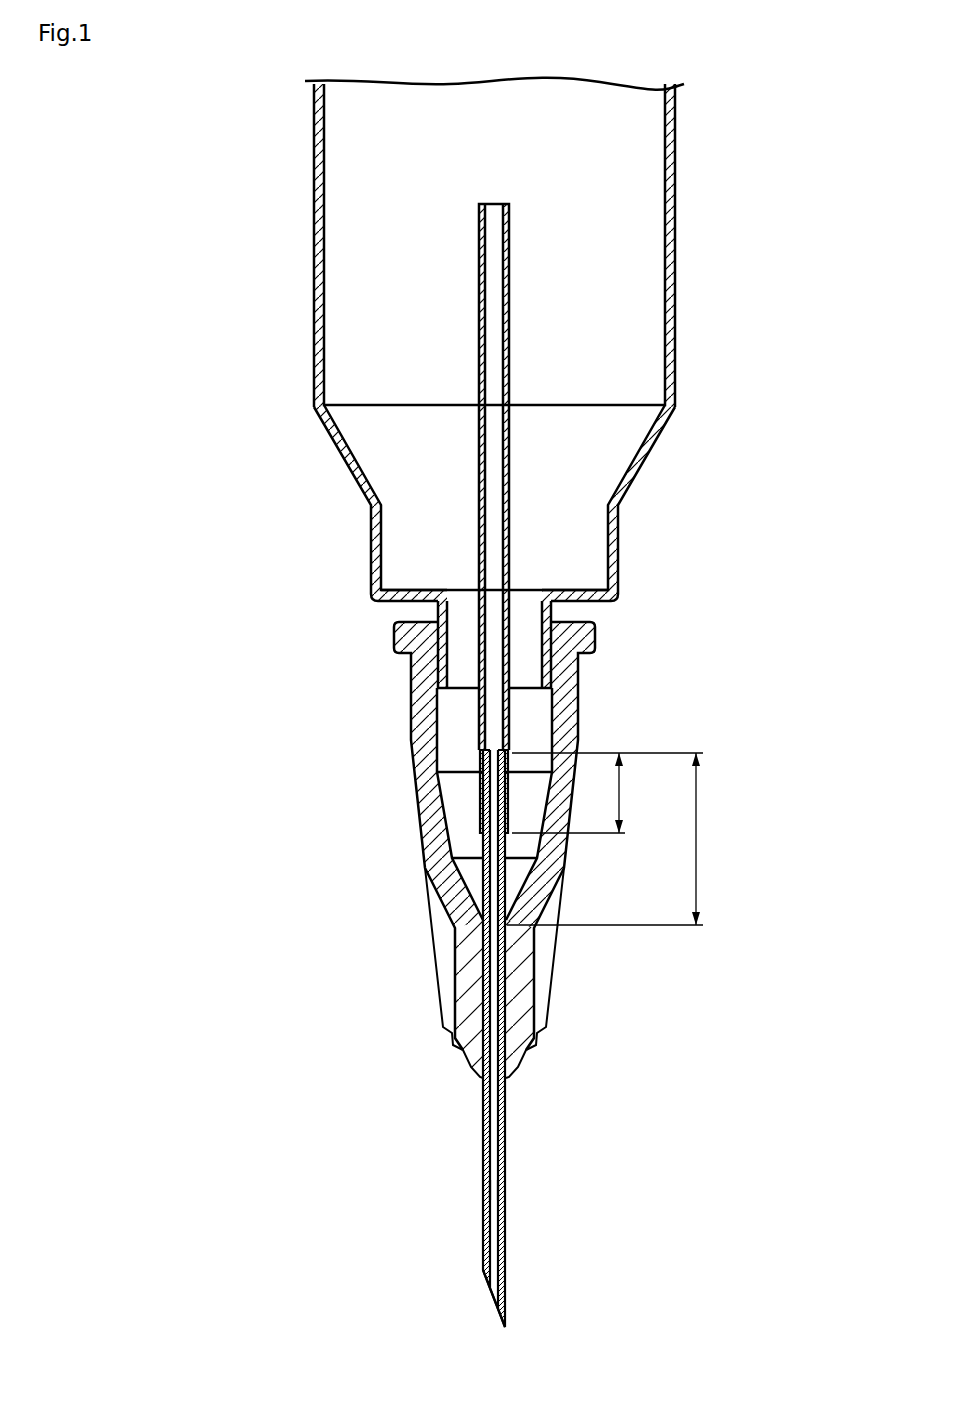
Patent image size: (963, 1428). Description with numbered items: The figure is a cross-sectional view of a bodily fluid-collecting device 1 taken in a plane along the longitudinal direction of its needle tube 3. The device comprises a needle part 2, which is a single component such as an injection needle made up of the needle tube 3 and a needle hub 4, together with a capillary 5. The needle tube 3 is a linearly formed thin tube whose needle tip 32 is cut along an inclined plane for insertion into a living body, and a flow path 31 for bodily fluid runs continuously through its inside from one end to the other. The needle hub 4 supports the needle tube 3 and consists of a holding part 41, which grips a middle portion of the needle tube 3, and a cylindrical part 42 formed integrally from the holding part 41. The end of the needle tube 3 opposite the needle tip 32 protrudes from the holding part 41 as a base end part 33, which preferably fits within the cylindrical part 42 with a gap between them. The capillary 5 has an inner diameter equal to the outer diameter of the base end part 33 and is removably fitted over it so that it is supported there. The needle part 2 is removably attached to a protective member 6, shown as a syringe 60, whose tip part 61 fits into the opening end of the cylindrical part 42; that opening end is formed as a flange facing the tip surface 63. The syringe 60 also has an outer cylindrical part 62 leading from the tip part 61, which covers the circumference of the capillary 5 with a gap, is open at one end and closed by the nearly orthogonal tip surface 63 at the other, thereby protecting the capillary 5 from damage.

The bodily fluid-collecting device 1 is at (728, 241).
The needle part 2 is at (383, 975).
The needle tube 3 is at (505, 1137).
The needle hub 4 is at (580, 711).
The capillary 5 is at (509, 286).
The protective member 6 is at (475, 383).
The syringe 60 is at (320, 149).
The tip part 61 is at (551, 670).
The outer cylindrical part 62 is at (676, 350).
The tip surface 63 is at (386, 603).
The flow path 31 is at (493, 1190).
The needle tip 32 is at (492, 1300).
The base end part 33 is at (483, 848).
The holding part 41 is at (523, 985).
The cylindrical part 42 is at (411, 750).